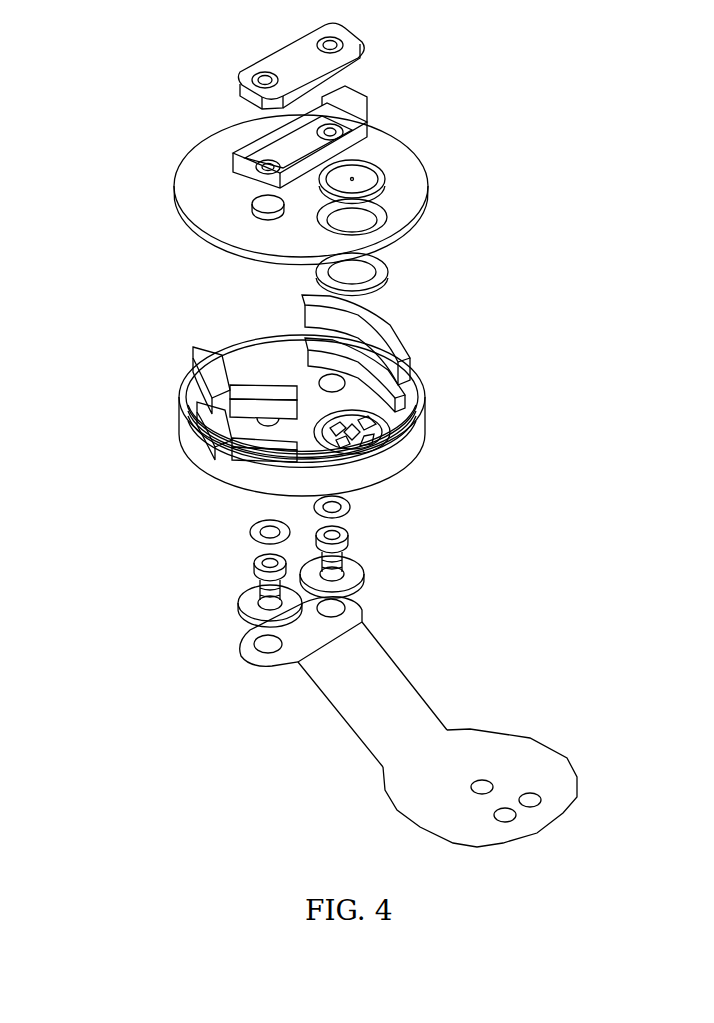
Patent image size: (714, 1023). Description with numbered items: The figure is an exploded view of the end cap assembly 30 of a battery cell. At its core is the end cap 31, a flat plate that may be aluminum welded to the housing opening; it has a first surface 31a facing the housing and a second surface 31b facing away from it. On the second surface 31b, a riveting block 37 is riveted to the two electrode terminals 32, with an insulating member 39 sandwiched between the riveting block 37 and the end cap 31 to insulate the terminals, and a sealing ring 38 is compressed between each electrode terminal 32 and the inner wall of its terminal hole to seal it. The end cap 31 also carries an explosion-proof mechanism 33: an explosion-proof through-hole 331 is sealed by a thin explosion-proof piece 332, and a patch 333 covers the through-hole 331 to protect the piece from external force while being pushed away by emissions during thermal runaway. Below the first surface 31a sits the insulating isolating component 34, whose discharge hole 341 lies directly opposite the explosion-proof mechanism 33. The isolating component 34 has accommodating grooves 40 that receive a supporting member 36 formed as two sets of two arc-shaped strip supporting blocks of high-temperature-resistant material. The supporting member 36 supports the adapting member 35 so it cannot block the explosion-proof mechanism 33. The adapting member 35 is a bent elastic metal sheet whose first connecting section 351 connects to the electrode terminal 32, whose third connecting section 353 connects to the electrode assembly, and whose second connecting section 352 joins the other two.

The end cap assembly 30 is at (158, 123).
The end cap 31 is at (311, 197).
The first surface 31a is at (200, 242).
The second surface 31b is at (200, 188).
The electrode terminal 32 is at (362, 565).
The explosion-proof mechanism 33 is at (475, 229).
The explosion-proof through-hole 331 is at (382, 200).
The explosion-proof piece 332 is at (388, 272).
The patch 333 is at (380, 180).
The isolating component 34 is at (367, 415).
The discharge hole 341 is at (392, 440).
The adapting member 35 is at (439, 722).
The first connecting section 351 is at (346, 608).
The second connecting section 352 is at (353, 672).
The third connecting section 353 is at (497, 765).
The supporting member 36 is at (400, 333).
The riveting block 37 is at (360, 58).
The sealing ring 38 is at (350, 507).
The insulating member 39 is at (355, 112).
The accommodating groove 40 is at (345, 385).